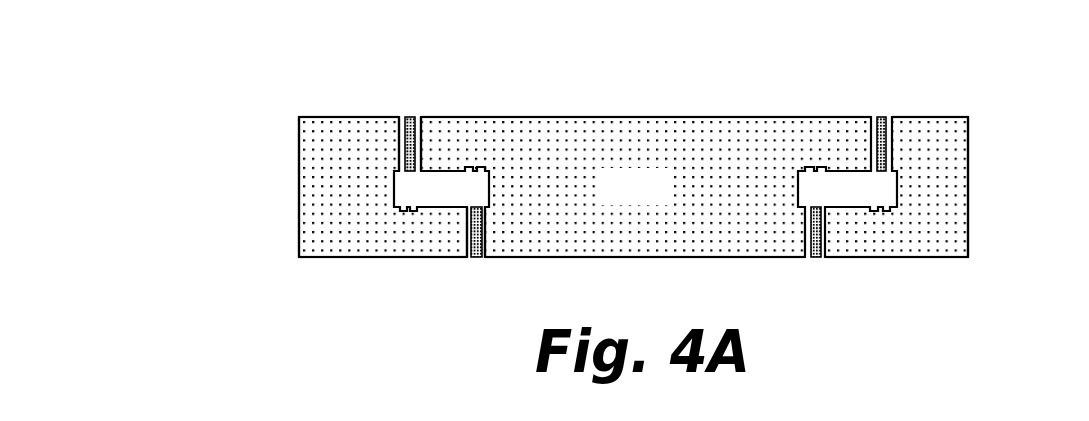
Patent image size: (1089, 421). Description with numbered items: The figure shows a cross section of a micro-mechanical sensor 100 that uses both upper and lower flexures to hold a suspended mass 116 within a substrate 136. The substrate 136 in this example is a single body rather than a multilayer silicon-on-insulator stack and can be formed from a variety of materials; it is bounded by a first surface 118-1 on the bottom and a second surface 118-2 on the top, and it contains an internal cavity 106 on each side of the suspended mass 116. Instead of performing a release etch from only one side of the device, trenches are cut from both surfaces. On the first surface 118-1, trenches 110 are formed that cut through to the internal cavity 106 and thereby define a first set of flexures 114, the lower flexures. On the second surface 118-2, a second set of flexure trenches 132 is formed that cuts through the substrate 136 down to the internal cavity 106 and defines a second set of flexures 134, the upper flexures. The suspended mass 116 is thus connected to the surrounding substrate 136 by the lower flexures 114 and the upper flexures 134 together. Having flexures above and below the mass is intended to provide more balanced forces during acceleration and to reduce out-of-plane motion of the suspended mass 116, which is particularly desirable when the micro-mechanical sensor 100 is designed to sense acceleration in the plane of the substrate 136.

The micro-mechanical sensor 100 is at (1010, 113).
The internal cavity 106 is at (483, 181).
The trenches 110 is at (471, 258).
The first set of flexures 114 is at (480, 258).
The suspended mass 116 is at (658, 200).
The first surface 118-1 is at (735, 258).
The second surface 118-2 is at (720, 117).
The flexure trenches 132 is at (405, 116).
The second set of flexures 134 is at (411, 116).
The substrate 136 is at (298, 144).